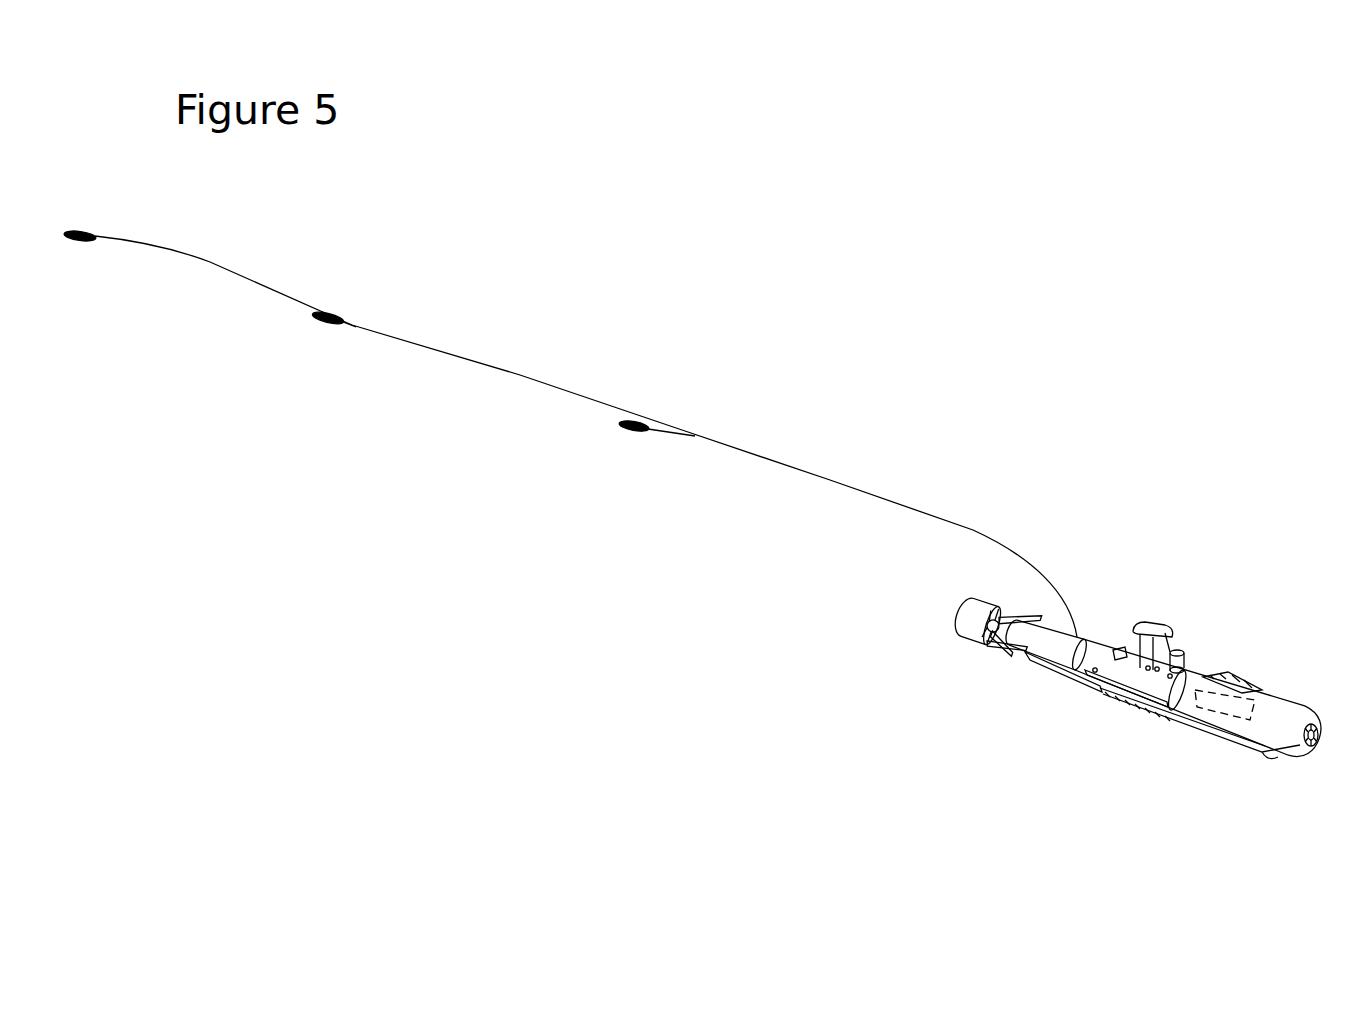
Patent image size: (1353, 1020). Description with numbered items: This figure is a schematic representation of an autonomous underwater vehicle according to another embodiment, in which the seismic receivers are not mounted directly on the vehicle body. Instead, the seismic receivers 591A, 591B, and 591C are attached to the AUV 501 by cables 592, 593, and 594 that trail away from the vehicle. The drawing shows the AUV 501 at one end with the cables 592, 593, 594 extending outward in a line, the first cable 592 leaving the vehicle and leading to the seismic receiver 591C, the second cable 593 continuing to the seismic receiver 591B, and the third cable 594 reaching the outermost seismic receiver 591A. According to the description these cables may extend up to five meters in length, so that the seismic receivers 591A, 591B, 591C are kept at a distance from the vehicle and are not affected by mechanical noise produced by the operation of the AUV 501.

The autonomous underwater vehicle 501 is at (1263, 707).
The cable 592 is at (830, 480).
The cable 593 is at (480, 360).
The cable 594 is at (208, 262).
The seismic receiver 591A is at (76, 243).
The seismic receiver 591B is at (316, 321).
The seismic receiver 591C is at (630, 433).